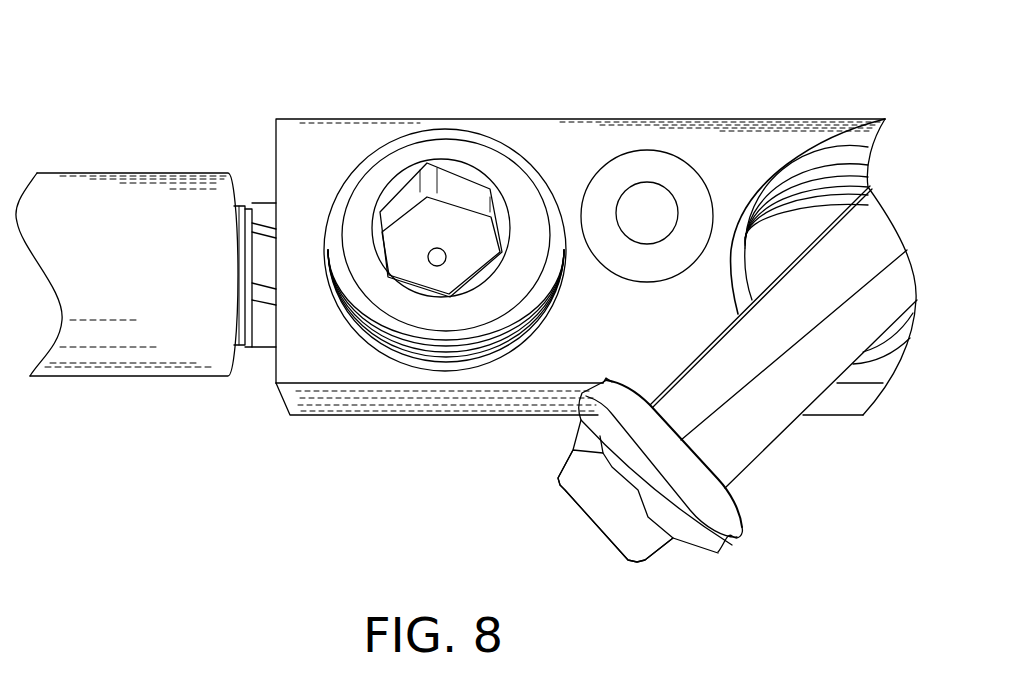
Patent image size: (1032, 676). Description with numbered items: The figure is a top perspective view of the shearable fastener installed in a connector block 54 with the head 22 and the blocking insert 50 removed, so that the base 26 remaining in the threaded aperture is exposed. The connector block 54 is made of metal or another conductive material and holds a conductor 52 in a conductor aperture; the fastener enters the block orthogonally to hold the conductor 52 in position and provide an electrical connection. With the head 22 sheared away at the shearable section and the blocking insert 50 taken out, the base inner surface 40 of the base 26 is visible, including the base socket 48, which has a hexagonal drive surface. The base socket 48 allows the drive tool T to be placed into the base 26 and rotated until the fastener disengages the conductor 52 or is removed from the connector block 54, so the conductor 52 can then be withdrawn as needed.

The head 22 is at (701, 374).
The base 26 is at (360, 185).
The base inner surface 40 is at (402, 186).
The base socket 48 is at (463, 192).
The blocking insert 50 is at (645, 163).
The conductor 52 is at (158, 163).
The connector block 54 is at (300, 404).
The drive tool T is at (580, 523).